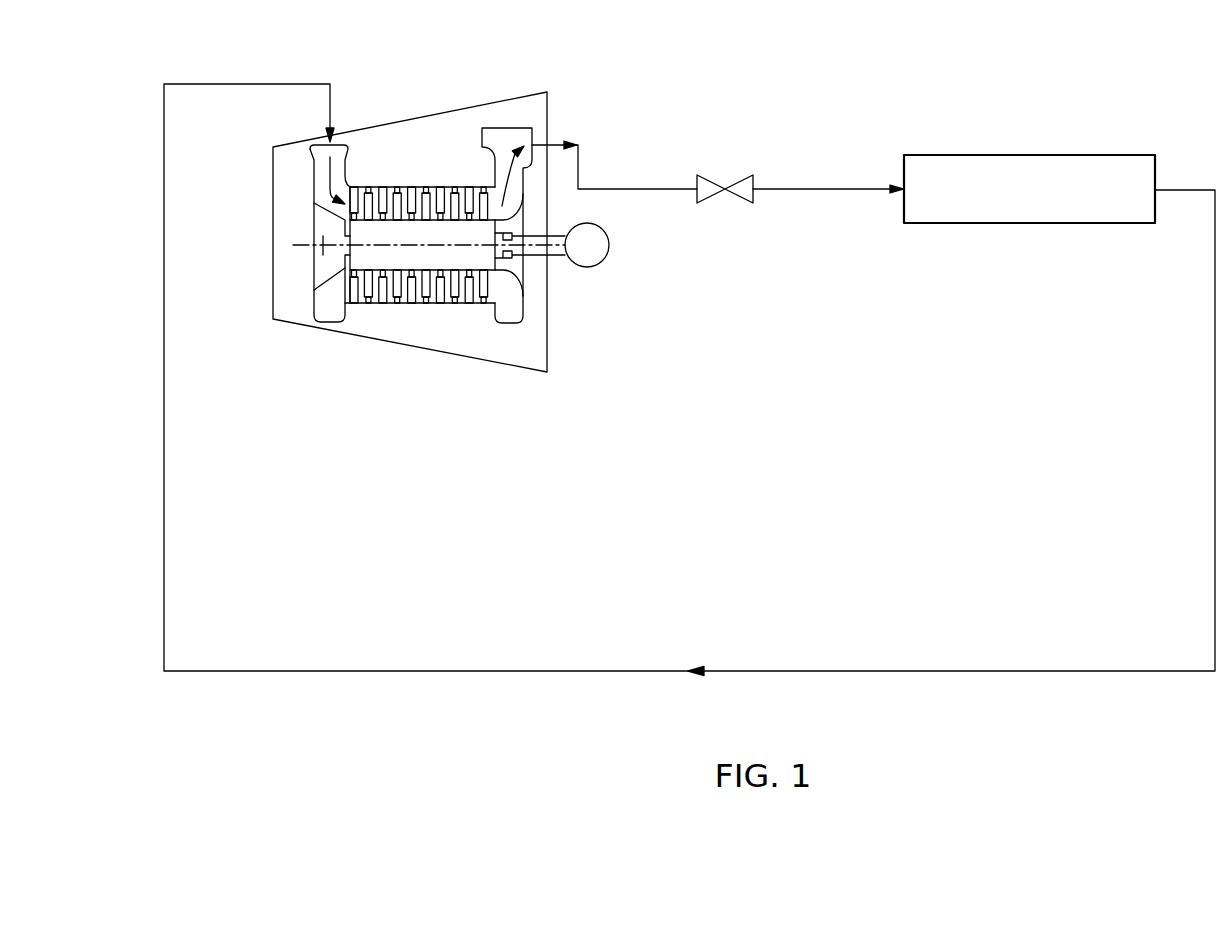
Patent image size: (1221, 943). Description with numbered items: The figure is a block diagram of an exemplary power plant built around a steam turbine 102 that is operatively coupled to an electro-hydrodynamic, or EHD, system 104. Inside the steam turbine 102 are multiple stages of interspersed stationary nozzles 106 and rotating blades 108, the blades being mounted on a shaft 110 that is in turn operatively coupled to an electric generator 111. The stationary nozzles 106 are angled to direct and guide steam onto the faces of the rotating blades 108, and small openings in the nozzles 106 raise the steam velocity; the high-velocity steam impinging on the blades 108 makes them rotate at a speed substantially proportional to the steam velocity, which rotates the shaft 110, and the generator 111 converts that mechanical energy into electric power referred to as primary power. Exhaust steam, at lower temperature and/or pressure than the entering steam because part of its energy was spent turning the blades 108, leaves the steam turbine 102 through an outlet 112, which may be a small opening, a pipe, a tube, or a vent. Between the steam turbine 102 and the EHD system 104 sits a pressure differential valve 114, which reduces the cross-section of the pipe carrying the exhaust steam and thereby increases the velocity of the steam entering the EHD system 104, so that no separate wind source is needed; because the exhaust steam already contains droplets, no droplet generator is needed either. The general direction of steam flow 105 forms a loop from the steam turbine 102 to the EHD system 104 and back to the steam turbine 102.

The steam turbine 102 is at (425, 116).
The EHD system 104 is at (1013, 155).
The direction of steam flow 105 is at (700, 668).
The stationary nozzles 106 is at (375, 290).
The rotating blades 108 is at (385, 197).
The shaft 110 is at (468, 258).
The electric generator 111 is at (588, 268).
The outlet 112 is at (508, 128).
The pressure differential valve 114 is at (738, 176).